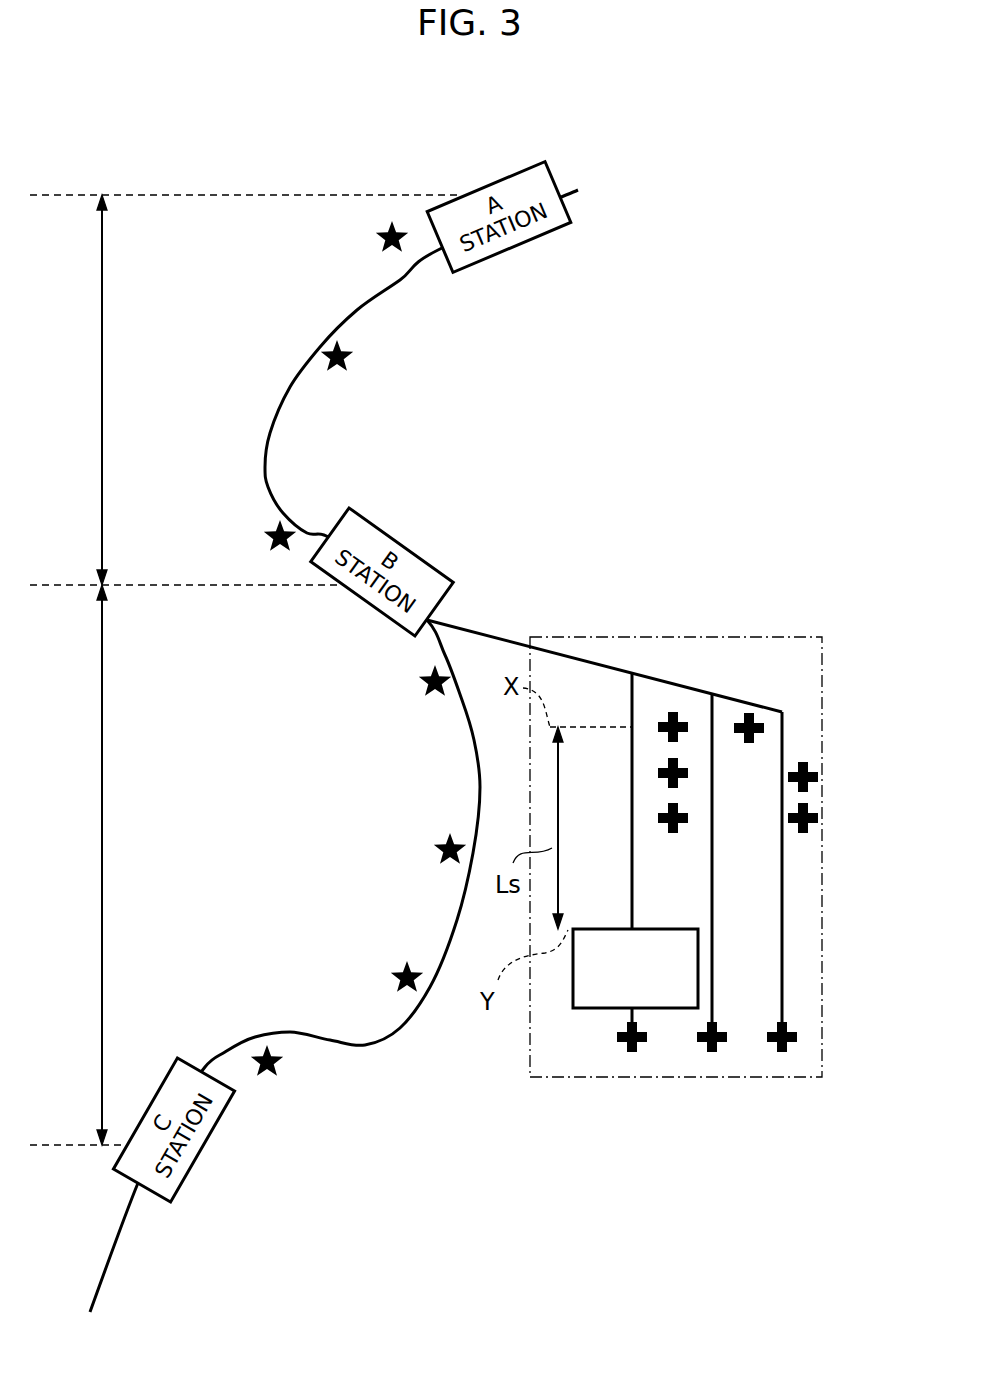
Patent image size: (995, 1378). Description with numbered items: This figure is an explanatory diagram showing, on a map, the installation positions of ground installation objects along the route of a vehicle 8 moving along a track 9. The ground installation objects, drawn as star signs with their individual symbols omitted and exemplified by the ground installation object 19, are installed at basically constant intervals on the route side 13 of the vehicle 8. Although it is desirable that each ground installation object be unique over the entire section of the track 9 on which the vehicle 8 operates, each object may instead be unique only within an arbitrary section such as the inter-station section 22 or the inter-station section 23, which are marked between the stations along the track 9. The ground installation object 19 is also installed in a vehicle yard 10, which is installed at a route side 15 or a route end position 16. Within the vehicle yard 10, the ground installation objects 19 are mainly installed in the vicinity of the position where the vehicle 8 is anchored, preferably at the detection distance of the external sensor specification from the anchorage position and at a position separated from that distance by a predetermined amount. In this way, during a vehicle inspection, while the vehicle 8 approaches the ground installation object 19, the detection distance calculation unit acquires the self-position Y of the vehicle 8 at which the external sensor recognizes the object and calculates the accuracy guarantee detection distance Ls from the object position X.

The vehicle 8 is at (595, 1008).
The track 9 is at (497, 652).
The vehicle yard 10 is at (762, 637).
The route side 13 is at (310, 423).
The route side 15 is at (807, 732).
The route end position 16 is at (794, 1037).
The ground installation object 19 is at (682, 773).
The inter-station section 22 is at (102, 378).
The inter-station section 23 is at (102, 850).